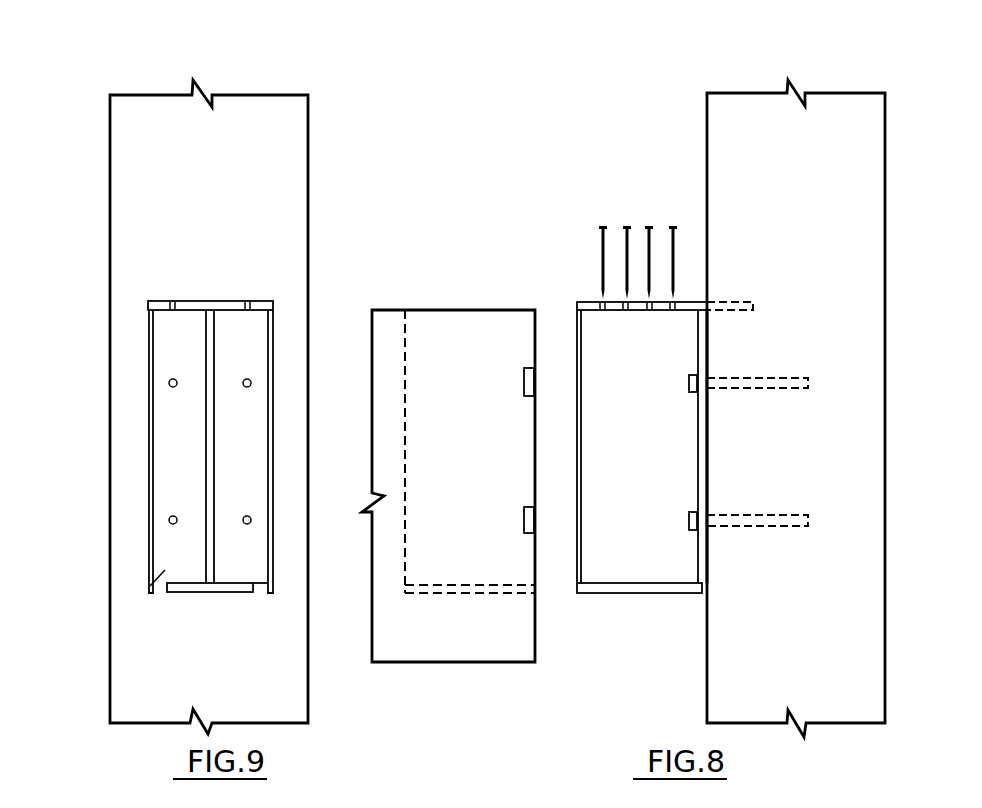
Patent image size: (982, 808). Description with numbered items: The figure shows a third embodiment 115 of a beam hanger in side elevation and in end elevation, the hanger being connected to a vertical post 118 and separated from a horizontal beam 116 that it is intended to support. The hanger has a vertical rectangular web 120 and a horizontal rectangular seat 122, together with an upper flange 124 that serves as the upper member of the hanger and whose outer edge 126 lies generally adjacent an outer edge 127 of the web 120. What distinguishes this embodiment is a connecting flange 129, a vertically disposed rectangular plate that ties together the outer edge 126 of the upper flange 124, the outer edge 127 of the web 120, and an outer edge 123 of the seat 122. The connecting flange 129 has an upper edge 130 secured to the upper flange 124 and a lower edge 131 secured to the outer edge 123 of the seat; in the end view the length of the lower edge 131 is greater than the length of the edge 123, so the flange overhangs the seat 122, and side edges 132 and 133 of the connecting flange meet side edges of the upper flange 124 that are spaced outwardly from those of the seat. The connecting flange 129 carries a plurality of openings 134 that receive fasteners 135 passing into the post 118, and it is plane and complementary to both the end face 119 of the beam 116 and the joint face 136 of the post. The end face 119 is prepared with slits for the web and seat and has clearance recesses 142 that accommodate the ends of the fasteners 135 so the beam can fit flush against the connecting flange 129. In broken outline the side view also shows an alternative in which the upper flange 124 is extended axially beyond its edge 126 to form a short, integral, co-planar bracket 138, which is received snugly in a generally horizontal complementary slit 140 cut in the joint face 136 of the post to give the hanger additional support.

In FIG. 9, the third embodiment of beam hanger 115 is at (322, 279).
In FIG. 8, the third embodiment of beam hanger 115 is at (594, 694).
In FIG. 8, the beam 116 is at (468, 663).
In FIG. 9, the post 118 is at (260, 92).
In FIG. 8, the post 118 is at (735, 93).
In FIG. 8, the end face of the beam 119 is at (535, 643).
In FIG. 9, the web 120 is at (203, 455).
In FIG. 8, the web 120 is at (660, 505).
In FIG. 9, the seat 122 is at (183, 594).
In FIG. 8, the seat 122 is at (592, 595).
In FIG. 8, the outer edge of the seat 123 is at (707, 588).
In FIG. 9, the upper flange 124 is at (204, 300).
In FIG. 8, the upper flange 124 is at (583, 298).
In FIG. 8, the outer edge of the upper flange 126 is at (708, 310).
In FIG. 8, the outer edge of the web 127 is at (698, 430).
In FIG. 9, the connecting flange 129 is at (148, 589).
In FIG. 8, the connecting flange 129 is at (709, 475).
In FIG. 9, the upper edge of the connecting flange 130 is at (242, 306).
In FIG. 8, the upper edge of the connecting flange 130 is at (708, 300).
In FIG. 9, the lower edge of the connecting flange 131 is at (258, 595).
In FIG. 9, the side edge of the connecting flange 132 is at (148, 487).
In FIG. 9, the side edge of the connecting flange 133 is at (273, 423).
In FIG. 9, the openings 134 is at (251, 381).
In FIG. 8, the fasteners 135 is at (688, 390).
In FIG. 8, the joint face of the post 136 is at (707, 205).
In FIG. 8, the bracket 138 is at (738, 270).
In FIG. 8, the slit 140 is at (753, 306).
In FIG. 8, the clearance recesses 142 is at (523, 383).